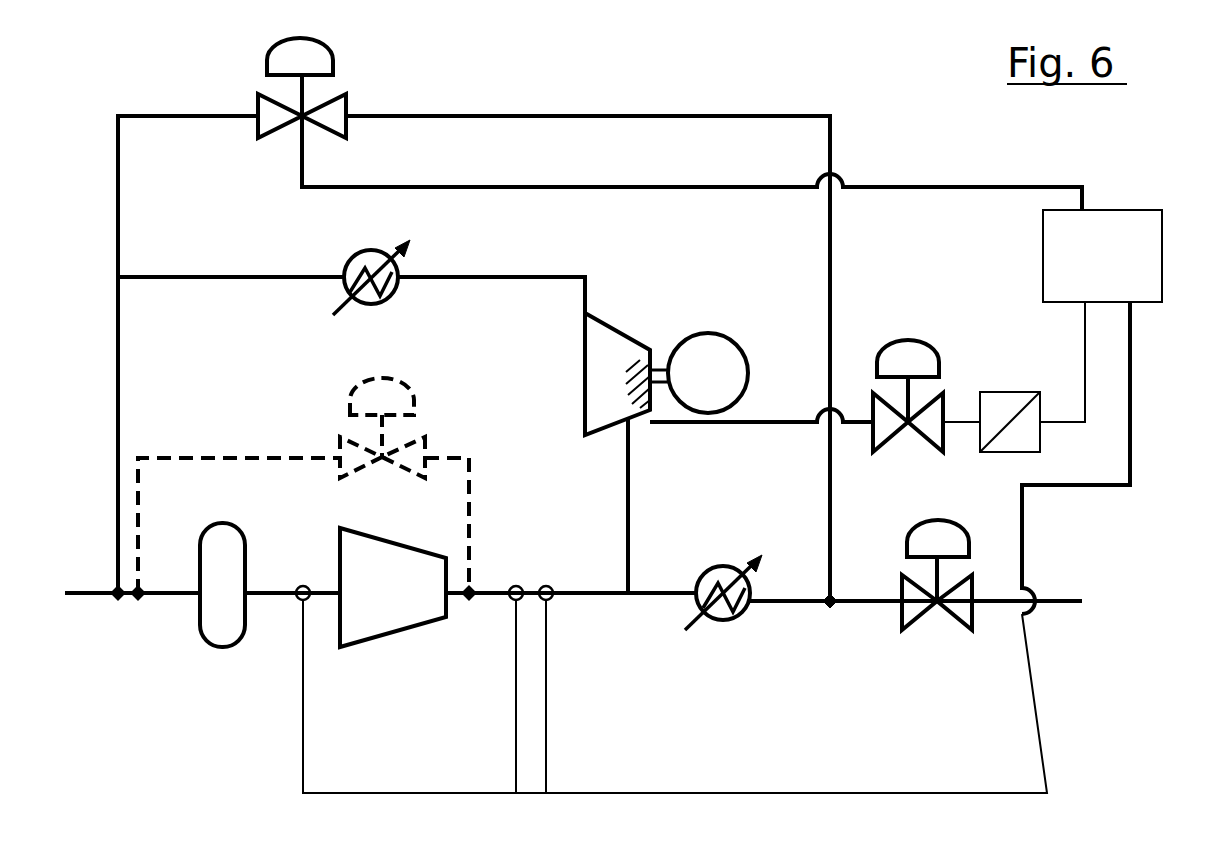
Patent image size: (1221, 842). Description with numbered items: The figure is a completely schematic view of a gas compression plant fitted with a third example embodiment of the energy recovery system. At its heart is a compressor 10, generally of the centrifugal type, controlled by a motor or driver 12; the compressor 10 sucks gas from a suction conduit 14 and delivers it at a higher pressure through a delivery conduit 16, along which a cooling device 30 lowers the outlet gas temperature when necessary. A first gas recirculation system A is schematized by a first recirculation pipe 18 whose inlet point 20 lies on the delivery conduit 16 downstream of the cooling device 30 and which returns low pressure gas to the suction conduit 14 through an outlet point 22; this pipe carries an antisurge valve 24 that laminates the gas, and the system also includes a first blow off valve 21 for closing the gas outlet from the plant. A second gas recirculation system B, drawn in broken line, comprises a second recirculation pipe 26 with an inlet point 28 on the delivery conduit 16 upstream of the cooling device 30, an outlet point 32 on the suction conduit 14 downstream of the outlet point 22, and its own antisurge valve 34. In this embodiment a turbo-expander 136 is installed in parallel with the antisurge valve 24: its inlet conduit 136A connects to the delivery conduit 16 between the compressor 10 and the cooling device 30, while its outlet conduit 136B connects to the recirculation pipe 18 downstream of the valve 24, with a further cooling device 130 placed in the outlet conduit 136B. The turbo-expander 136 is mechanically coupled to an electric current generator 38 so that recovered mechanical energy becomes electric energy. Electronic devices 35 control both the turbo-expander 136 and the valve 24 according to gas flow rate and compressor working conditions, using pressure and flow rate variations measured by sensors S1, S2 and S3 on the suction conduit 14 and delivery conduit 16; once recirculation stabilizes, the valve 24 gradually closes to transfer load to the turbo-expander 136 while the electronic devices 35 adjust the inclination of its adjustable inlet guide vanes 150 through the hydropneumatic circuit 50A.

The compressor 10 is at (375, 640).
The motor or driver 12 is at (222, 650).
The suction conduit 14 is at (262, 593).
The delivery conduit 16 is at (456, 600).
The first recirculation pipe 18 is at (165, 116).
The inlet point 20 is at (830, 612).
The first blow off valve 21 is at (952, 620).
The outlet point 22 is at (118, 603).
The antisurge valve 24 is at (347, 100).
The second recirculation pipe 26 is at (268, 458).
The inlet point 28 is at (472, 602).
The cooling device 30 is at (718, 622).
The outlet point 32 is at (138, 603).
The antisurge valve 34 is at (425, 440).
The electronic devices 35 is at (1140, 202).
The electric current generator 38 is at (708, 333).
The hydropneumatic circuit 50A is at (960, 388).
The further cooling device 130 is at (348, 258).
The turbo-expander 136 is at (601, 330).
The inlet conduit 136A is at (628, 482).
The outlet conduit 136B is at (225, 280).
The adjustable inlet guide vanes 150 is at (635, 350).
The first gas recirculation system A is at (812, 110).
The second gas recirculation system B is at (200, 445).
The sensor S1 is at (303, 586).
The sensor S2 is at (516, 586).
The sensor S3 is at (547, 586).